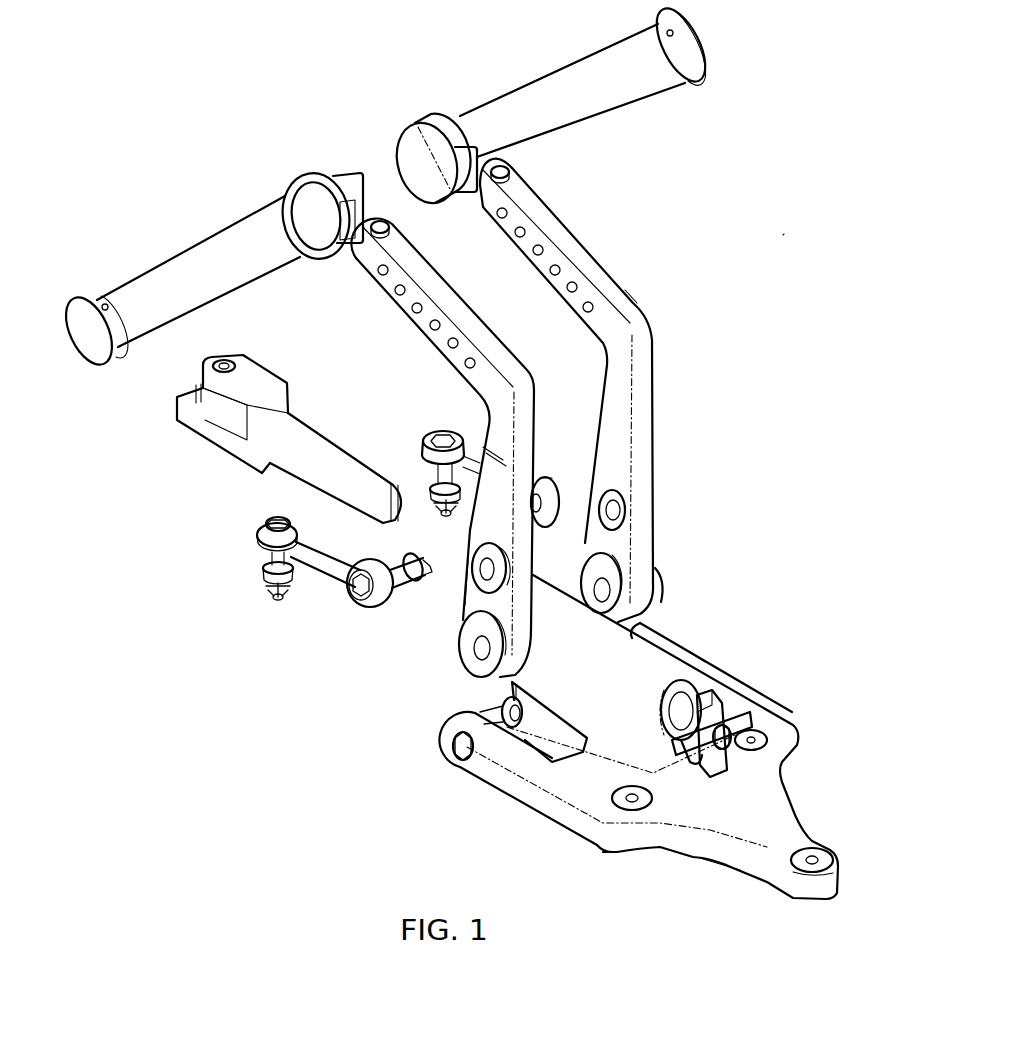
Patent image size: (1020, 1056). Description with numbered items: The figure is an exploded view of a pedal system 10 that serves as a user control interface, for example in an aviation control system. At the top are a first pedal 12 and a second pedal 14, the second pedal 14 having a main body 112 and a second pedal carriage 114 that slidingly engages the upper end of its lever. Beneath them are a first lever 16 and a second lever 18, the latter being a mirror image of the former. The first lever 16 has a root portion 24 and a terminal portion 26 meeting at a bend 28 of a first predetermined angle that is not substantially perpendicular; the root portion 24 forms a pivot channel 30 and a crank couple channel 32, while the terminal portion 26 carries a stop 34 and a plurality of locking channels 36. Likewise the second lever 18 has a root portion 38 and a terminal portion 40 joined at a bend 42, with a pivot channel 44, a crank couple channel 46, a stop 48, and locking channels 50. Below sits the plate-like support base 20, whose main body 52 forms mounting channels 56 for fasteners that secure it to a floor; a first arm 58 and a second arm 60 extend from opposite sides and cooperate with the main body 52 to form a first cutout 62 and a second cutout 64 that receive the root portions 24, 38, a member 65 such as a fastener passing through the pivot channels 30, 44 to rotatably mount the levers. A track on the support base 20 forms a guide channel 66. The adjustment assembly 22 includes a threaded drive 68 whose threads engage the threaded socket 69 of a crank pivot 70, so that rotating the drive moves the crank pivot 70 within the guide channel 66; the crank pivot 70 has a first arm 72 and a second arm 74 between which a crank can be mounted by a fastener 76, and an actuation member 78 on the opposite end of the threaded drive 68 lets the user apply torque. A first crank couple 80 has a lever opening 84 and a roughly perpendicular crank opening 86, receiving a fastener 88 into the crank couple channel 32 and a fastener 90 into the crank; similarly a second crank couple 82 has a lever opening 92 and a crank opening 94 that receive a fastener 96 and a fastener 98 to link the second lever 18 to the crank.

The pedal system 10 is at (783, 235).
The first pedal 12 is at (197, 251).
The second pedal 14 is at (617, 50).
The first lever 16 is at (473, 380).
The second lever 18 is at (645, 345).
The support base 20 is at (778, 747).
The adjustment assembly 22 is at (171, 512).
The root portion 24 is at (475, 600).
The terminal portion 26 is at (407, 252).
The bend 28 is at (527, 382).
The pivot channel 30 is at (475, 660).
The crank couple channel 32 is at (480, 571).
The stop 34 is at (377, 218).
The locking channels 36 is at (414, 308).
The root portion 38 is at (650, 390).
The terminal portion 40 is at (578, 250).
The bend 42 is at (620, 298).
The pivot channel 44 is at (590, 577).
The crank couple channel 46 is at (615, 510).
The stop 48 is at (503, 165).
The locking channels 50 is at (541, 247).
The main body 52 is at (727, 823).
The mounting channels 56 is at (628, 800).
The first arm 58 is at (498, 780).
The second arm 60 is at (703, 660).
The first cutout 62 is at (563, 735).
The second cutout 64 is at (645, 625).
The member 65 is at (665, 633).
The guide channel 66 is at (697, 695).
The threaded drive 68 is at (678, 714).
The threaded socket 69 is at (333, 457).
The crank pivot 70 is at (311, 403).
The first arm 72 is at (253, 375).
The second arm 74 is at (212, 420).
The fastener 76 is at (222, 362).
The actuation member 78 is at (750, 727).
The first crank couple 80 is at (320, 564).
The second crank couple 82 is at (462, 467).
The lever opening 84 is at (370, 566).
The crank opening 86 is at (255, 557).
The fastener 88 is at (352, 597).
The fastener 90 is at (278, 518).
The lever opening 92 is at (550, 497).
The crank opening 94 is at (422, 461).
The fastener 96 is at (548, 478).
The fastener 98 is at (440, 433).
The main body 112 is at (333, 172).
The second pedal carriage 114 is at (448, 118).